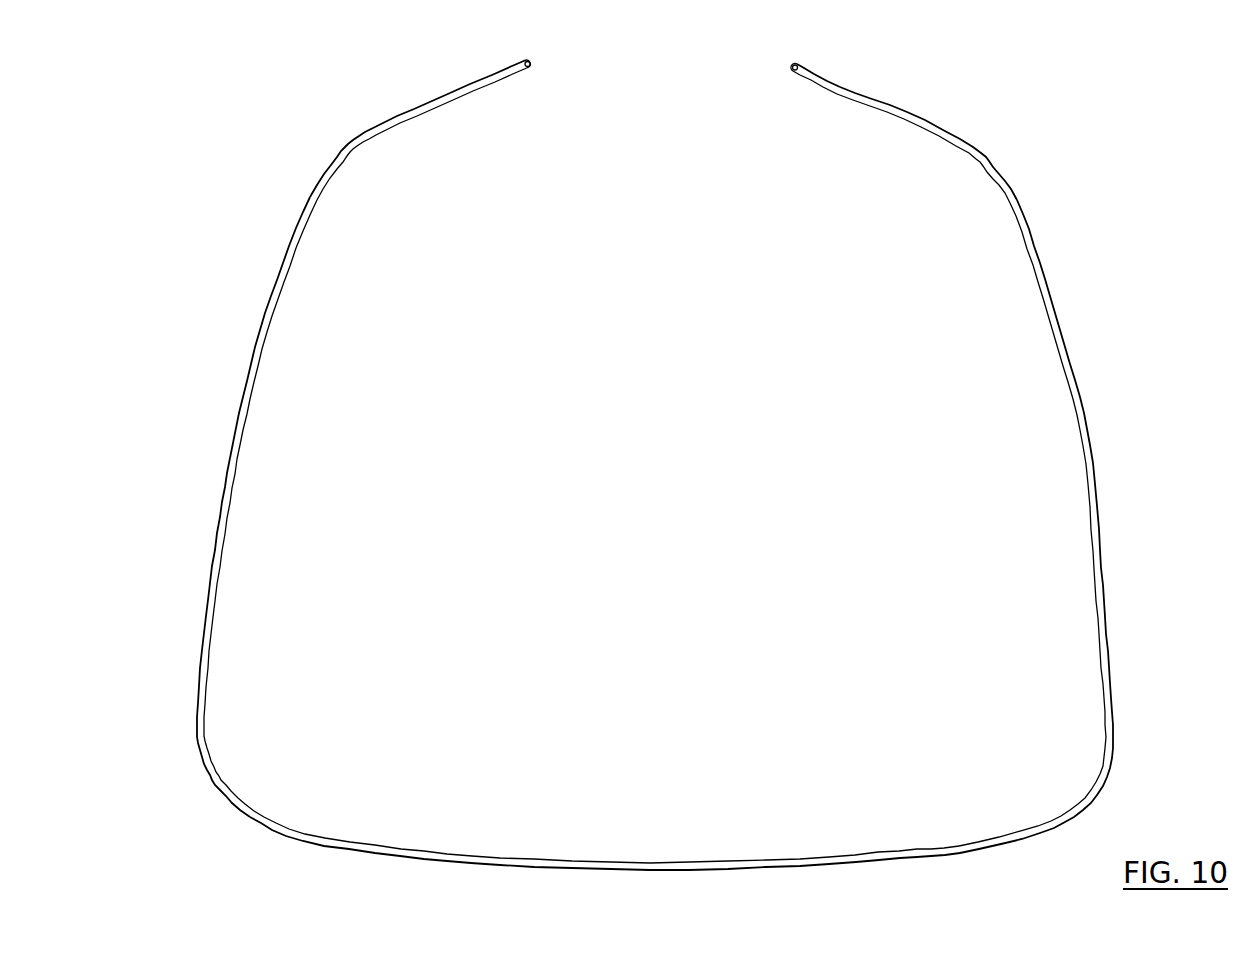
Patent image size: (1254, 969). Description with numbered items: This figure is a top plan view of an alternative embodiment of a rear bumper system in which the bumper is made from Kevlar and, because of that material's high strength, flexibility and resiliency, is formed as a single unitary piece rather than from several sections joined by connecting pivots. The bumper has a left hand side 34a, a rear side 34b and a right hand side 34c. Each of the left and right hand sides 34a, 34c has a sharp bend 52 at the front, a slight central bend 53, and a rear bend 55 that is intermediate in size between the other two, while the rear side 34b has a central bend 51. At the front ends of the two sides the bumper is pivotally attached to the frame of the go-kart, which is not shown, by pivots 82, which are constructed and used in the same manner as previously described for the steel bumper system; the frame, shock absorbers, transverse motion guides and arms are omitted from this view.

The left hand side 34a is at (230, 455).
The rear side 34b is at (695, 871).
The right hand side 34c is at (1090, 458).
The central bend 51 is at (651, 874).
The sharp bend 52 is at (331, 152).
The central bend 53 is at (237, 403).
The rear bend 55 is at (201, 767).
The pivots 82 is at (536, 69).